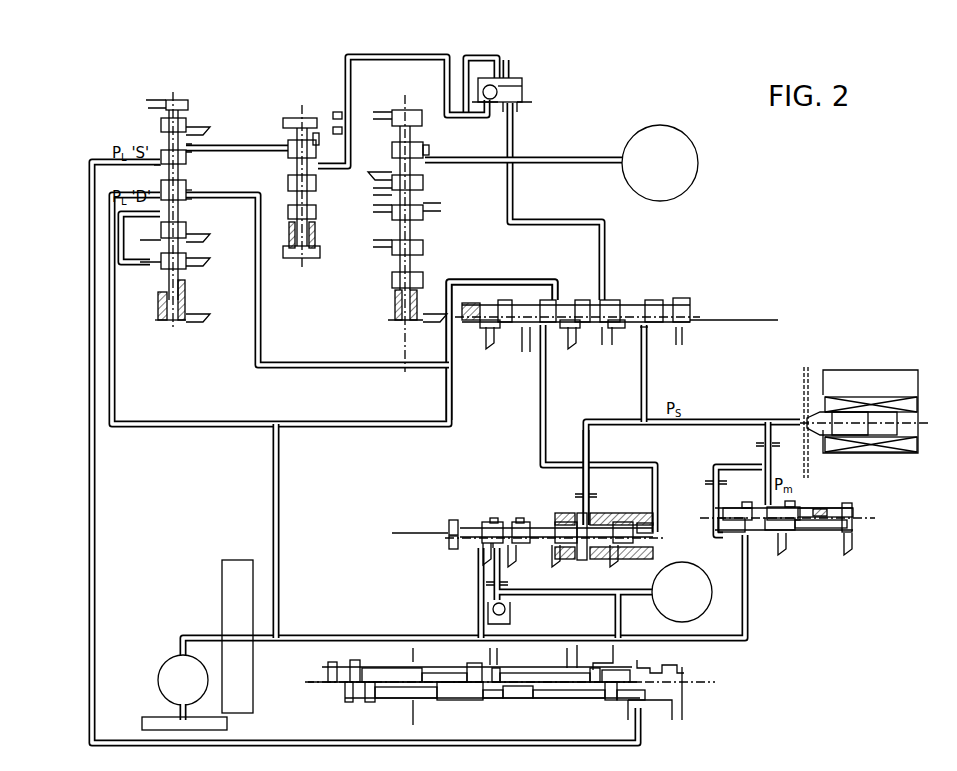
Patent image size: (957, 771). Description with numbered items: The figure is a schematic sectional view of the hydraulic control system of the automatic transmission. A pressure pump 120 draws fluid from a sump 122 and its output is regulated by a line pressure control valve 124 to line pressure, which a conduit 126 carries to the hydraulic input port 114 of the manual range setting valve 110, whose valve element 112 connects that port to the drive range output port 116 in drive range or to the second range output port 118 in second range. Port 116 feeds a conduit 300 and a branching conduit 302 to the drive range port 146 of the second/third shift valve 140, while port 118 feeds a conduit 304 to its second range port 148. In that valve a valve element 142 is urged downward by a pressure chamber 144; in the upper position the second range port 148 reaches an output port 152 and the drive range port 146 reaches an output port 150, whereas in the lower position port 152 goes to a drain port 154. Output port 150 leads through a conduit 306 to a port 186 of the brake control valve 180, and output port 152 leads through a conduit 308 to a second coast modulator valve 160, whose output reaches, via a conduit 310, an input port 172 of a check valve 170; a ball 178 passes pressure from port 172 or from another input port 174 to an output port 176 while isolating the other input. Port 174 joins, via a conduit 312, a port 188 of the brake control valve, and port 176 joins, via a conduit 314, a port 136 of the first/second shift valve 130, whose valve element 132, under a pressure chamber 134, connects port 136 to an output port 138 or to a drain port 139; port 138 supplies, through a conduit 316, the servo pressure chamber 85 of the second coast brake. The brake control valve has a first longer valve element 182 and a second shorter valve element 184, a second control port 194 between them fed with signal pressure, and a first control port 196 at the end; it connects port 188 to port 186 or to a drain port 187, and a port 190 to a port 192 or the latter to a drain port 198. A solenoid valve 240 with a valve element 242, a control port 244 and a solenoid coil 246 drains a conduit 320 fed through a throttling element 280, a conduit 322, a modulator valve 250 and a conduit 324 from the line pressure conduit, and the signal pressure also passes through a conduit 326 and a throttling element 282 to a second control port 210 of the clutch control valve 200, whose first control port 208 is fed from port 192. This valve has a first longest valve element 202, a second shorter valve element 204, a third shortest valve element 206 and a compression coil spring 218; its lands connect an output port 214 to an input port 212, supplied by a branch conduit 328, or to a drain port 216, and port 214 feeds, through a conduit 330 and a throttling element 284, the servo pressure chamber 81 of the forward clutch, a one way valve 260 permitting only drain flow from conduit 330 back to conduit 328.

The hydraulic servo pressure chamber 81 is at (698, 578).
The hydraulic servo pressure chamber 85 is at (698, 160).
The manual range setting valve 110 is at (692, 682).
The valve element 112 is at (542, 696).
The hydraulic input port 114 is at (568, 664).
The drive range output port 116 is at (668, 664).
The second range output port 118 is at (648, 716).
The pressure pump 120 is at (158, 680).
The sump 122 is at (238, 722).
The line pressure control valve 124 is at (254, 684).
The conduit 126 is at (302, 641).
The first/second shift valve 130 is at (403, 108).
The valve element 132 is at (388, 196).
The pressure chamber 134 is at (388, 118).
The port 136 is at (426, 150).
The output port 138 is at (428, 170).
The drain port 139 is at (374, 178).
The second/third shift valve 140 is at (173, 98).
The valve element 142 is at (190, 186).
The pressure chamber 144 is at (160, 112).
The drive range port 146 is at (153, 215).
The second range port 148 is at (152, 166).
The output port 150 is at (192, 198).
The output port 152 is at (192, 152).
The drain port 154 is at (196, 130).
The second coast modulator valve 160 is at (300, 116).
The check valve 170 is at (513, 76).
The input port 172 is at (491, 100).
The input port 174 is at (518, 108).
The output port 176 is at (506, 70).
The ball 178 is at (508, 92).
The brake control valve 180 is at (694, 306).
The first longer valve element 182 is at (582, 300).
The second shorter valve element 184 is at (656, 300).
The output port 186 is at (618, 334).
The drain port 187 is at (580, 336).
The port 188 is at (606, 300).
The port 190 is at (552, 300).
The port 192 is at (528, 350).
The second control port 194 is at (650, 330).
The first control port 196 is at (684, 336).
The drain port 198 is at (522, 338).
The clutch control valve 200 is at (452, 520).
The first longest valve element 202 is at (516, 520).
The second shorter valve element 204 is at (562, 556).
The third shortest valve element 206 is at (634, 516).
The first control port 208 is at (656, 530).
The second control port 210 is at (586, 514).
The input port 212 is at (484, 548).
The output port 214 is at (494, 550).
The drain port 216 is at (518, 548).
The compression coil spring 218 is at (546, 526).
The solenoid valve 240 is at (898, 394).
The valve element 242 is at (860, 396).
The control port 244 is at (806, 420).
The solenoid coil 246 is at (870, 453).
The modulator valve 250 is at (856, 514).
The one way valve 260 is at (508, 606).
The throttling element 280 is at (768, 446).
The throttling element 282 is at (578, 494).
The throttling element 284 is at (510, 582).
The conduit 300 is at (360, 630).
The conduit 302 is at (190, 425).
The conduit 304 is at (96, 508).
The conduit 306 is at (342, 368).
The conduit 308 is at (250, 146).
The conduit 310 is at (418, 58).
The conduit 312 is at (545, 224).
The conduit 314 is at (480, 60).
The conduit 316 is at (546, 398).
The conduit 320 is at (706, 422).
The conduit 322 is at (772, 452).
The conduit 324 is at (748, 577).
The conduit 326 is at (590, 440).
The branch conduit 328 is at (478, 610).
The conduit 330 is at (548, 595).